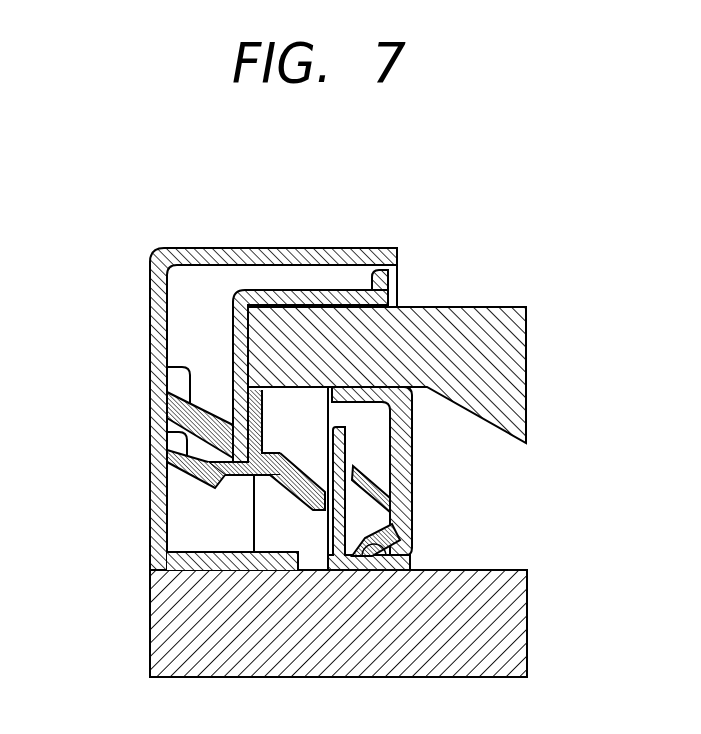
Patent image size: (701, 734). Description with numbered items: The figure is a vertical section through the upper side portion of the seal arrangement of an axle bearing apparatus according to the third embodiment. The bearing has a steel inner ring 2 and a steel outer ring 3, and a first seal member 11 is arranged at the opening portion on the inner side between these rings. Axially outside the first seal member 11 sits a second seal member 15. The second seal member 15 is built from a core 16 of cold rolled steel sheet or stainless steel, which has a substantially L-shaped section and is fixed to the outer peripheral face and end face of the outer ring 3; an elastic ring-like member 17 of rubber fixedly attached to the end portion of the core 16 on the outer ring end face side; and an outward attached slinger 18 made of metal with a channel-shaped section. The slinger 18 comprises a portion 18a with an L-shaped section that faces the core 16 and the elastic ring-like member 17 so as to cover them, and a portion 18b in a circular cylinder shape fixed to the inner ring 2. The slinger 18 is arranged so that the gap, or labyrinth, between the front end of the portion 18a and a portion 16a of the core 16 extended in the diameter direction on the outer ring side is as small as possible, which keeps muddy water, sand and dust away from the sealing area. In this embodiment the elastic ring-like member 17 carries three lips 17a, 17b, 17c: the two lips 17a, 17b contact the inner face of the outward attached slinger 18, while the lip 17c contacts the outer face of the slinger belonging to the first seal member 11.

The inner ring 2 is at (500, 617).
The outer ring 3 is at (502, 345).
The first seal member 11 is at (420, 483).
The second seal member 15 is at (279, 396).
The core 16 is at (370, 314).
The portion of the core extended in a diameter direction 16a is at (388, 281).
The elastic ring-like member 17 is at (191, 406).
The lip 17a is at (170, 369).
The lip 17b is at (170, 436).
The lip 17c is at (298, 489).
The outward attached slinger 18 is at (239, 396).
The portion having a section in an L-like shape 18a is at (381, 248).
The portion in a circular cylinder shape 18b is at (213, 580).